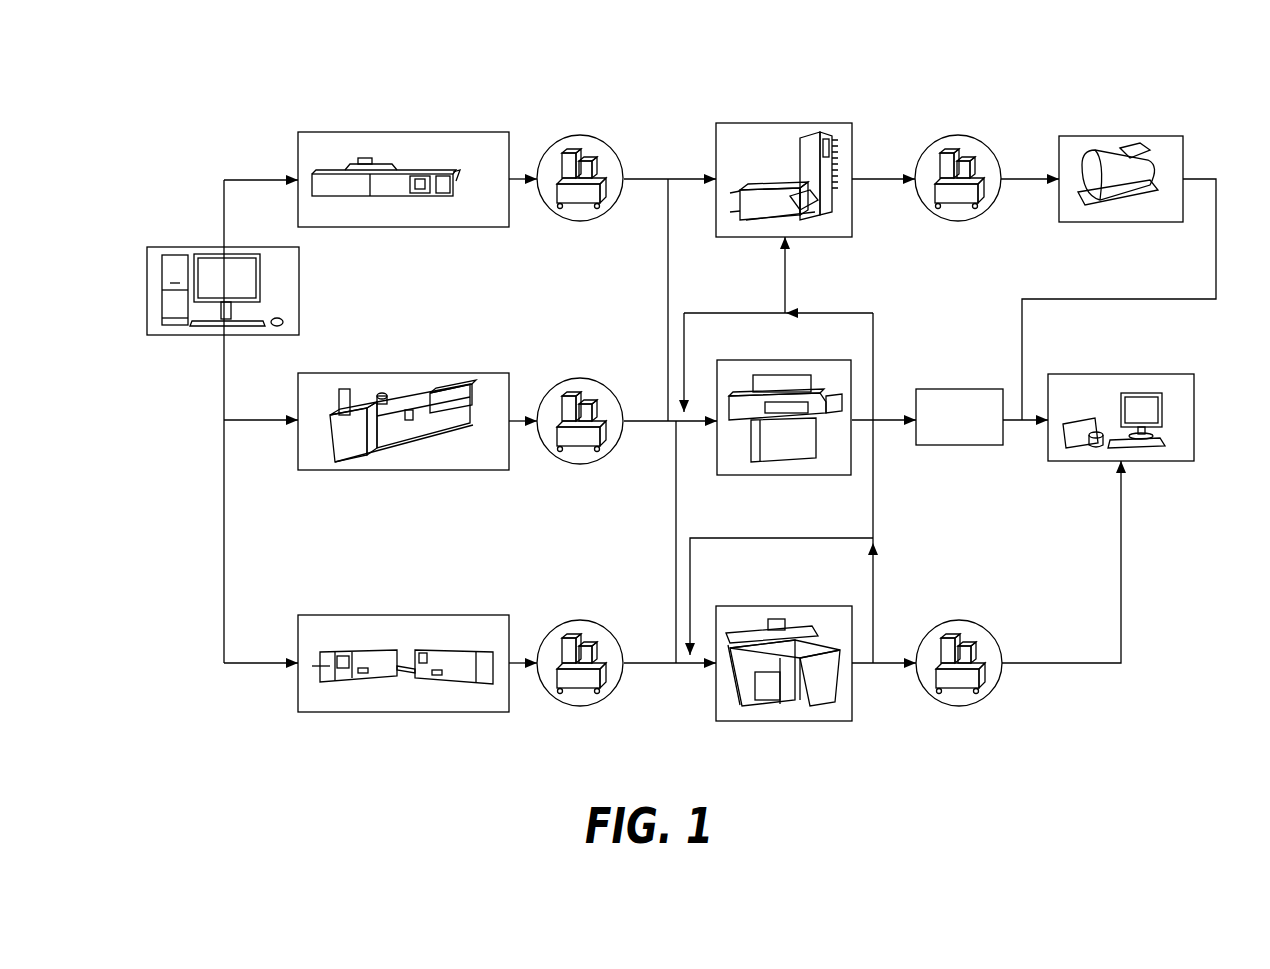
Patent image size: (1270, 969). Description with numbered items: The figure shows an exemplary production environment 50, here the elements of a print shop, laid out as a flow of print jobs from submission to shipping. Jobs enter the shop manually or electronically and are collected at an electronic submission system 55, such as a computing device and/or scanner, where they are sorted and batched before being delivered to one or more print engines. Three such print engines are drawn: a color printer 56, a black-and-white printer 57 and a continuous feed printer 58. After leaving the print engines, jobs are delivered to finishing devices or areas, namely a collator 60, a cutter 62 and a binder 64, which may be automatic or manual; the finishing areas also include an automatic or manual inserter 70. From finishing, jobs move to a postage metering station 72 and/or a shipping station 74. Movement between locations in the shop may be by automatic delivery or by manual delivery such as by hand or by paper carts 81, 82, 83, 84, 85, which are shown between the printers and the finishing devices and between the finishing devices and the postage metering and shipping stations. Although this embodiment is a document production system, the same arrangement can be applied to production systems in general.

The production environment 50 is at (250, 118).
The electronic submission system 55 is at (177, 335).
The color printer 56 is at (422, 227).
The black-and-white printer 57 is at (422, 470).
The continuous feed printer 58 is at (422, 712).
The paper cart 81 is at (578, 222).
The paper cart 82 is at (578, 464).
The paper cart 83 is at (578, 706).
The paper cart 84 is at (957, 222).
The paper cart 85 is at (958, 706).
The collator 60 is at (793, 237).
The cutter 62 is at (793, 475).
The binder 64 is at (793, 721).
The postage metering station 72 is at (1115, 222).
The inserter 70 is at (955, 445).
The shipping station 74 is at (1145, 461).